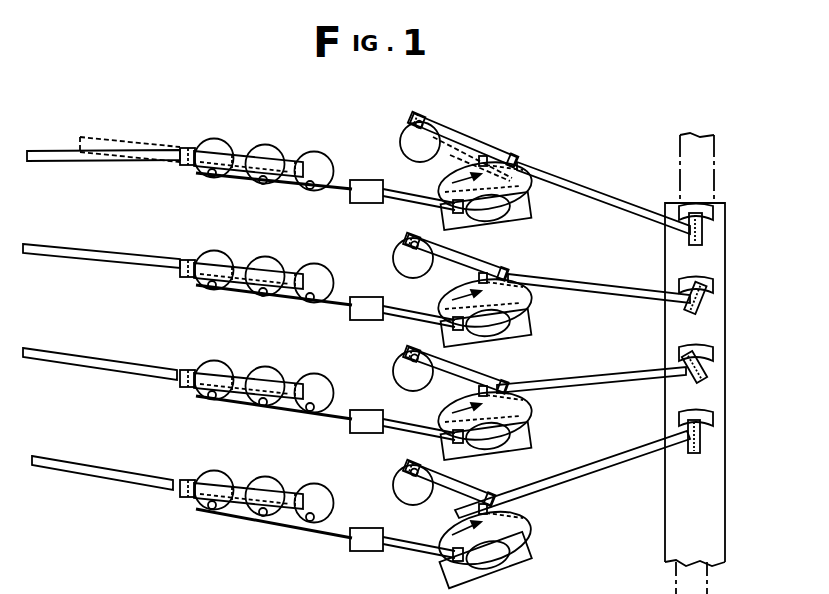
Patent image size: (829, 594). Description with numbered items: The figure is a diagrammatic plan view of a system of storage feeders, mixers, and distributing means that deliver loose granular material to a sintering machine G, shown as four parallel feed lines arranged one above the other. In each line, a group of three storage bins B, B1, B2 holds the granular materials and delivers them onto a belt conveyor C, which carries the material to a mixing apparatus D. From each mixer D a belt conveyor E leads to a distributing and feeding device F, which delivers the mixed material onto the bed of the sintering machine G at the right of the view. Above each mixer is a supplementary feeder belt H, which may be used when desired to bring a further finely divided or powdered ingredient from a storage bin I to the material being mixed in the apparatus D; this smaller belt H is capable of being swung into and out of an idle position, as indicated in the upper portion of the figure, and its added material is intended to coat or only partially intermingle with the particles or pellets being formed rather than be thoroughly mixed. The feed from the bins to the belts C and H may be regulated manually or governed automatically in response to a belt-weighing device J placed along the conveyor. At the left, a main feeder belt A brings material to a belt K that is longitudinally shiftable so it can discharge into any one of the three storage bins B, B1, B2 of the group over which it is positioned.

The main feeder belt A is at (56, 151).
The storage bin B is at (205, 250).
The storage bin B1 is at (260, 258).
The storage bin B2 is at (313, 264).
The belt conveyor C is at (337, 194).
The mixing apparatus D is at (533, 200).
The belt conveyor E is at (594, 198).
The distributing and feeding device F is at (662, 413).
The sintering machine G is at (718, 460).
The supplementary feeder belt H is at (462, 140).
The storage bin I is at (402, 243).
The belt-weighing device J is at (372, 180).
The longitudinally shiftable belt K is at (240, 157).